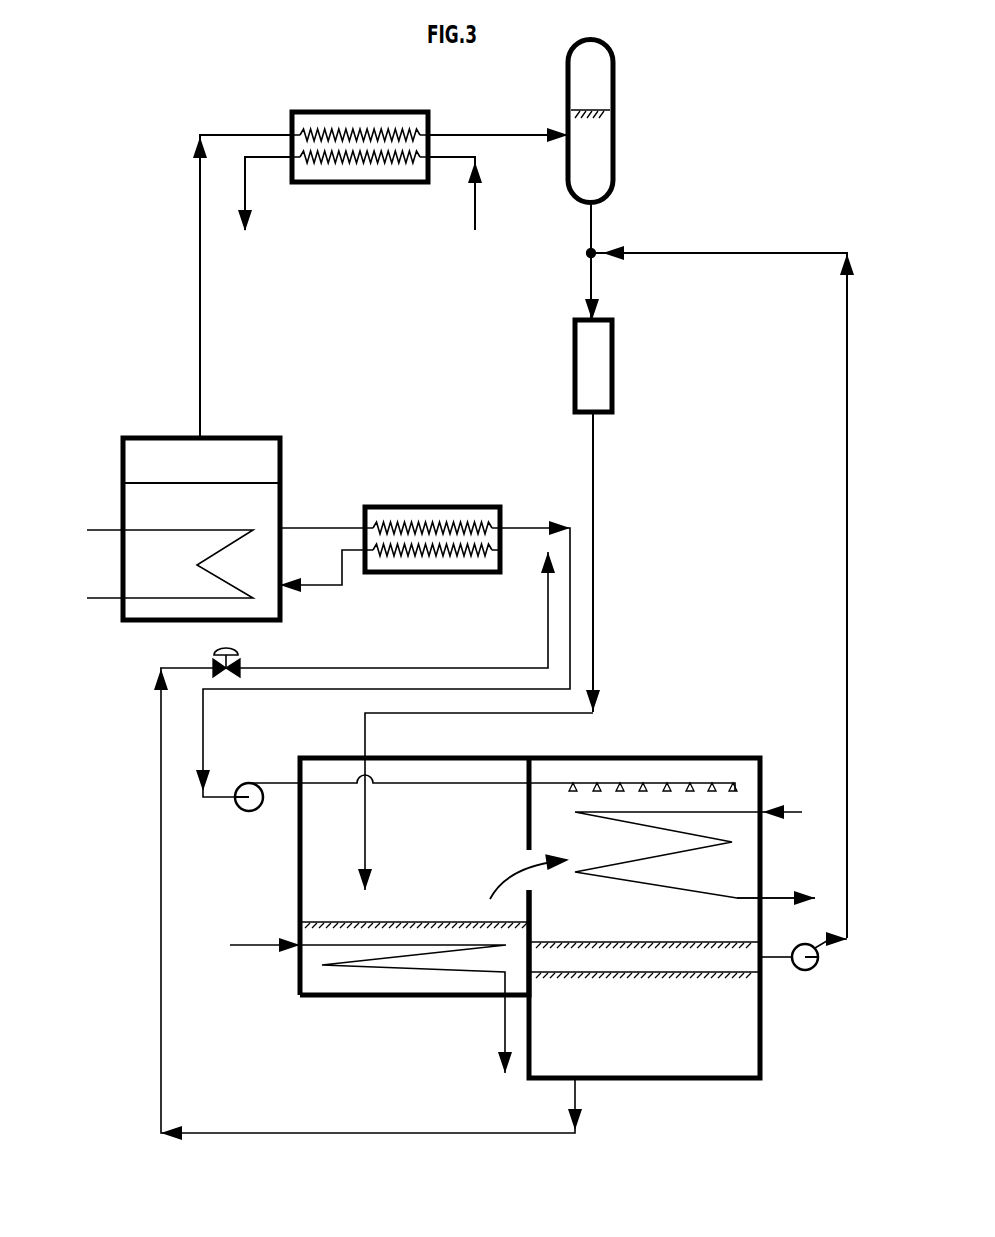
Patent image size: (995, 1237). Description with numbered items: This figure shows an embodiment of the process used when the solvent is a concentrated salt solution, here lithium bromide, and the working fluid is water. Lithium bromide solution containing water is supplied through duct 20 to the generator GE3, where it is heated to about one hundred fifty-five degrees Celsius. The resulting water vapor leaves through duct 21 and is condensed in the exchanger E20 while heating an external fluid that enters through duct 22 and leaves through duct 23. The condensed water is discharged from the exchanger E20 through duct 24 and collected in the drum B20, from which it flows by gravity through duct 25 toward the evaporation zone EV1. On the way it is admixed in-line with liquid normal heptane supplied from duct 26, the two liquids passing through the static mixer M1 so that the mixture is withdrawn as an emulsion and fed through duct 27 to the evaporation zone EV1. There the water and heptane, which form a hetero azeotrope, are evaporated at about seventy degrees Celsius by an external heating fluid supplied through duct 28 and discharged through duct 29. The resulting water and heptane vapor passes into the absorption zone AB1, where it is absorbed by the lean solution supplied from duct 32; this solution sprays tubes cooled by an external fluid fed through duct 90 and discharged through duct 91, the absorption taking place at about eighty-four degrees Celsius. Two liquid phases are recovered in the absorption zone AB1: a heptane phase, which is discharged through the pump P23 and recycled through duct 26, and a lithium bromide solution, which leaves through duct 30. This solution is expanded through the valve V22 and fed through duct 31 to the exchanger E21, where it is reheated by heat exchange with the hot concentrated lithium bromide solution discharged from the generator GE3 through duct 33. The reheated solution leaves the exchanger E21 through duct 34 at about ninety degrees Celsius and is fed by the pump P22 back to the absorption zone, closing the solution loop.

The duct 20 is at (332, 594).
The duct 21 is at (200, 218).
The duct 22 is at (472, 221).
The duct 23 is at (252, 221).
The duct 24 is at (484, 133).
The duct 25 is at (588, 222).
The duct 26 is at (685, 253).
The duct 27 is at (365, 838).
The duct 28 is at (243, 944).
The duct 29 is at (503, 1022).
The duct 30 is at (302, 1128).
The duct 31 is at (546, 605).
The duct 32 is at (268, 780).
The duct 33 is at (327, 526).
The duct 34 is at (262, 691).
The duct 90 is at (797, 812).
The duct 91 is at (797, 896).
The exchanger E20 is at (354, 110).
The drum B20 is at (614, 86).
The static mixer M1 is at (612, 358).
The generator GE3 is at (128, 624).
The exchanger E21 is at (434, 506).
The valve V22 is at (232, 650).
The pump P22 is at (252, 812).
The evaporation zone EV1 is at (325, 998).
The absorption zone AB1 is at (747, 751).
The pump P23 is at (810, 969).